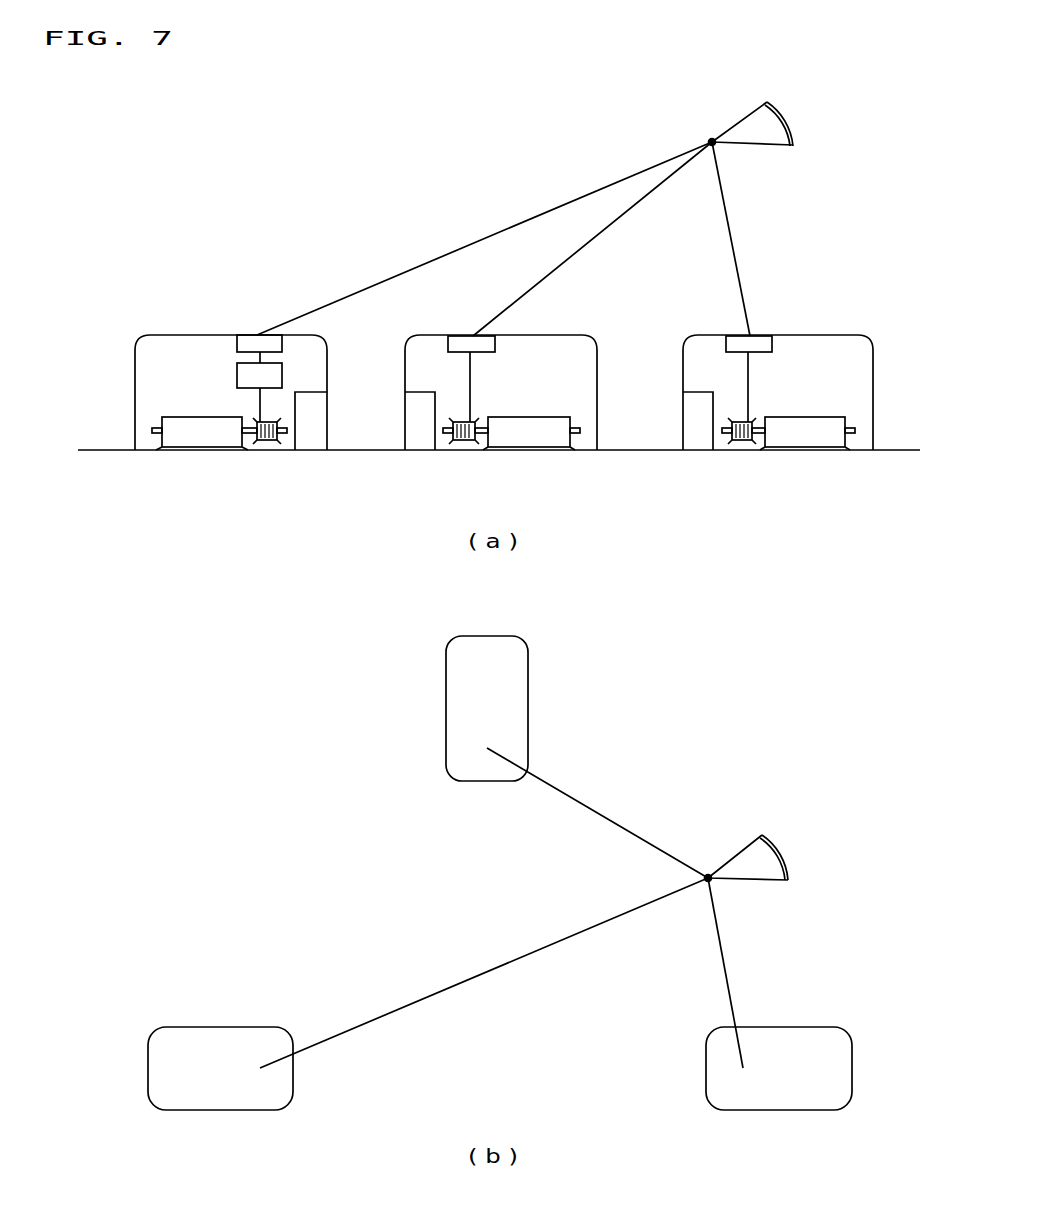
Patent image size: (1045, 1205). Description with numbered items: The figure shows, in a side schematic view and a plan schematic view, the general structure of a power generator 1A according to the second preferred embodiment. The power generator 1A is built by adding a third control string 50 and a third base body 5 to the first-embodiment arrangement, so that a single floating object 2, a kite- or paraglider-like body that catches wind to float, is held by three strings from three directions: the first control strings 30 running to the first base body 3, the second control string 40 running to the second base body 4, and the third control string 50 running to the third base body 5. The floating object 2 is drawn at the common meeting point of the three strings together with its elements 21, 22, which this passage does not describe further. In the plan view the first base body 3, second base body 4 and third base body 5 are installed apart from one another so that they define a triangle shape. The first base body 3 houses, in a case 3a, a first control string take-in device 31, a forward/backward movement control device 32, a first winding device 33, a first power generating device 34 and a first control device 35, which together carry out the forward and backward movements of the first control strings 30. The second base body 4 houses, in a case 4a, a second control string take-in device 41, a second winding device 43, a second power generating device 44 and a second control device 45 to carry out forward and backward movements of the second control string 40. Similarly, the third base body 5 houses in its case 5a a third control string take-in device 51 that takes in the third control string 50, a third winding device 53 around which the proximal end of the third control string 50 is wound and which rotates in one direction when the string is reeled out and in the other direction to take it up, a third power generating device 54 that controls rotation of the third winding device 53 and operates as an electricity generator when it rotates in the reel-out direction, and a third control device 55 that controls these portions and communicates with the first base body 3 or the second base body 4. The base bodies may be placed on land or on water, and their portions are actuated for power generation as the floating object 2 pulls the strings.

In FIG. 7A, the power generator 1A is at (431, 126).
In FIG. 7B, the power generator 1A is at (294, 760).
In FIG. 7A, the floating object 2 is at (760, 138).
In FIG. 7B, the floating object 2 is at (797, 877).
In FIG. 7A, the wind vane 21 is at (785, 110).
In FIG. 7A, the rotation shaft 22 is at (709, 140).
In FIG. 7A, the first control strings 30 is at (623, 180).
In FIG. 7B, the first control strings 30 is at (455, 985).
In FIG. 7A, the second control string 40 is at (731, 232).
In FIG. 7B, the second control string 40 is at (729, 965).
In FIG. 7A, the third control string 50 is at (628, 224).
In FIG. 7B, the third control string 50 is at (600, 812).
In FIG. 7A, the first base body 3 is at (222, 379).
In FIG. 7B, the first base body 3 is at (176, 1015).
In FIG. 7A, the case 3a is at (135, 392).
In FIG. 7A, the first control string take-in device 31 is at (255, 340).
In FIG. 7A, the forward/backward movement control device 32 is at (279, 377).
In FIG. 7A, the first winding device 33 is at (263, 440).
In FIG. 7A, the first power generating device 34 is at (195, 432).
In FIG. 7A, the first control device 35 is at (310, 445).
In FIG. 7A, the third base body 5 is at (533, 387).
In FIG. 7B, the third base body 5 is at (545, 711).
In FIG. 7A, the case 5a is at (595, 393).
In FIG. 7A, the third control string take-in device 51 is at (487, 342).
In FIG. 7A, the third winding device 53 is at (465, 440).
In FIG. 7A, the third power generating device 54 is at (533, 437).
In FIG. 7A, the third control device 55 is at (425, 437).
In FIG. 7A, the second base body 4 is at (806, 385).
In FIG. 7B, the second base body 4 is at (863, 1058).
In FIG. 7A, the case 4a is at (873, 395).
In FIG. 7A, the second control string take-in device 41 is at (760, 342).
In FIG. 7A, the second winding device 43 is at (741, 440).
In FIG. 7A, the second power generating device 44 is at (808, 437).
In FIG. 7A, the second control device 45 is at (703, 437).